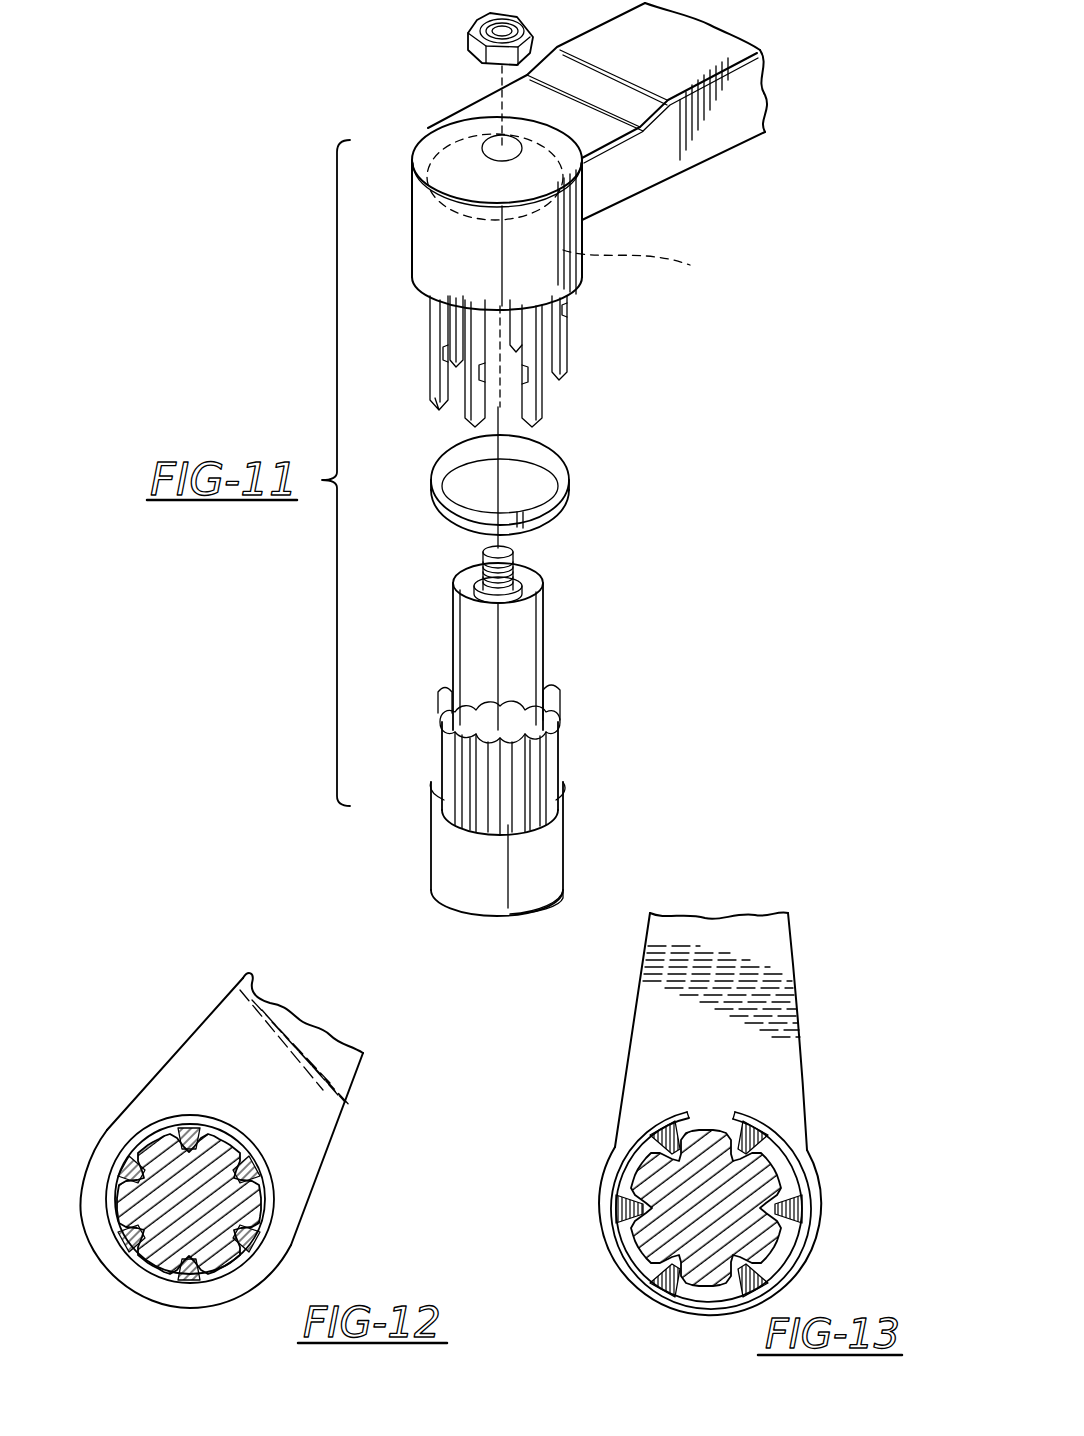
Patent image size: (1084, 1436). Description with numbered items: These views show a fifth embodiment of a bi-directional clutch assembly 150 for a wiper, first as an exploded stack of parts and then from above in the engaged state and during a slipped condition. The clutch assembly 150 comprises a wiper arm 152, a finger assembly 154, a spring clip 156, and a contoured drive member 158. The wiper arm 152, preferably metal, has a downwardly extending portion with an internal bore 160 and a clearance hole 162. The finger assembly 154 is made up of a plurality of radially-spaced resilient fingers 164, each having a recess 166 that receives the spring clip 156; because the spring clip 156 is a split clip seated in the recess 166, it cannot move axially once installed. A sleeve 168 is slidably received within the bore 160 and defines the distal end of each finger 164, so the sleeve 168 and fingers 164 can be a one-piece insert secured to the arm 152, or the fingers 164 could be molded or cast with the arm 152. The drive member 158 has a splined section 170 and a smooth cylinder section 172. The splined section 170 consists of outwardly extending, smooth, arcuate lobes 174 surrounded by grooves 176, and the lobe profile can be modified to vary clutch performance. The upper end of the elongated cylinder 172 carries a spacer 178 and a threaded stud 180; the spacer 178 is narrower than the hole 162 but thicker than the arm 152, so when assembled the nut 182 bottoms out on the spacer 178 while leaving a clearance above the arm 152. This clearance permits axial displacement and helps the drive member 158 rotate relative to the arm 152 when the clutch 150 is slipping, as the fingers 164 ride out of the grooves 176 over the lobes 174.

In FIG. 11, the bi-directional clutch assembly 150 is at (262, 186).
In FIG. 12, the bi-directional clutch assembly 150 is at (163, 982).
In FIG. 13, the bi-directional clutch assembly 150 is at (597, 1076).
In FIG. 11, the wiper arm 152 is at (753, 90).
In FIG. 12, the wiper arm 152 is at (233, 1087).
In FIG. 13, the wiper arm 152 is at (723, 1079).
In FIG. 11, the finger assembly 154 is at (600, 304).
In FIG. 11, the spring clip 156 is at (568, 492).
In FIG. 12, the spring clip 156 is at (143, 1140).
In FIG. 13, the spring clip 156 is at (777, 1136).
In FIG. 11, the contoured drive member 158 is at (555, 862).
In FIG. 12, the contoured drive member 158 is at (145, 1260).
In FIG. 13, the contoured drive member 158 is at (667, 1183).
In FIG. 11, the internal bore 160 is at (430, 165).
In FIG. 11, the clearance hole 162 is at (494, 147).
In FIG. 11, the resilient fingers 164 is at (437, 388).
In FIG. 12, the resilient fingers 164 is at (256, 1158).
In FIG. 13, the resilient fingers 164 is at (709, 1209).
In FIG. 11, the recess 166 is at (563, 320).
In FIG. 11, the sleeve 168 is at (647, 266).
In FIG. 11, the splined section 170 is at (560, 760).
In FIG. 11, the smooth cylinder section 172 is at (545, 658).
In FIG. 11, the lobes 174 is at (560, 720).
In FIG. 12, the lobes 174 is at (275, 1232).
In FIG. 13, the lobes 174 is at (767, 1215).
In FIG. 11, the grooves 176 is at (528, 777).
In FIG. 12, the grooves 176 is at (238, 1190).
In FIG. 13, the grooves 176 is at (757, 1183).
In FIG. 11, the spacer 178 is at (543, 597).
In FIG. 11, the threaded stud 180 is at (516, 560).
In FIG. 11, the nut 182 is at (470, 24).